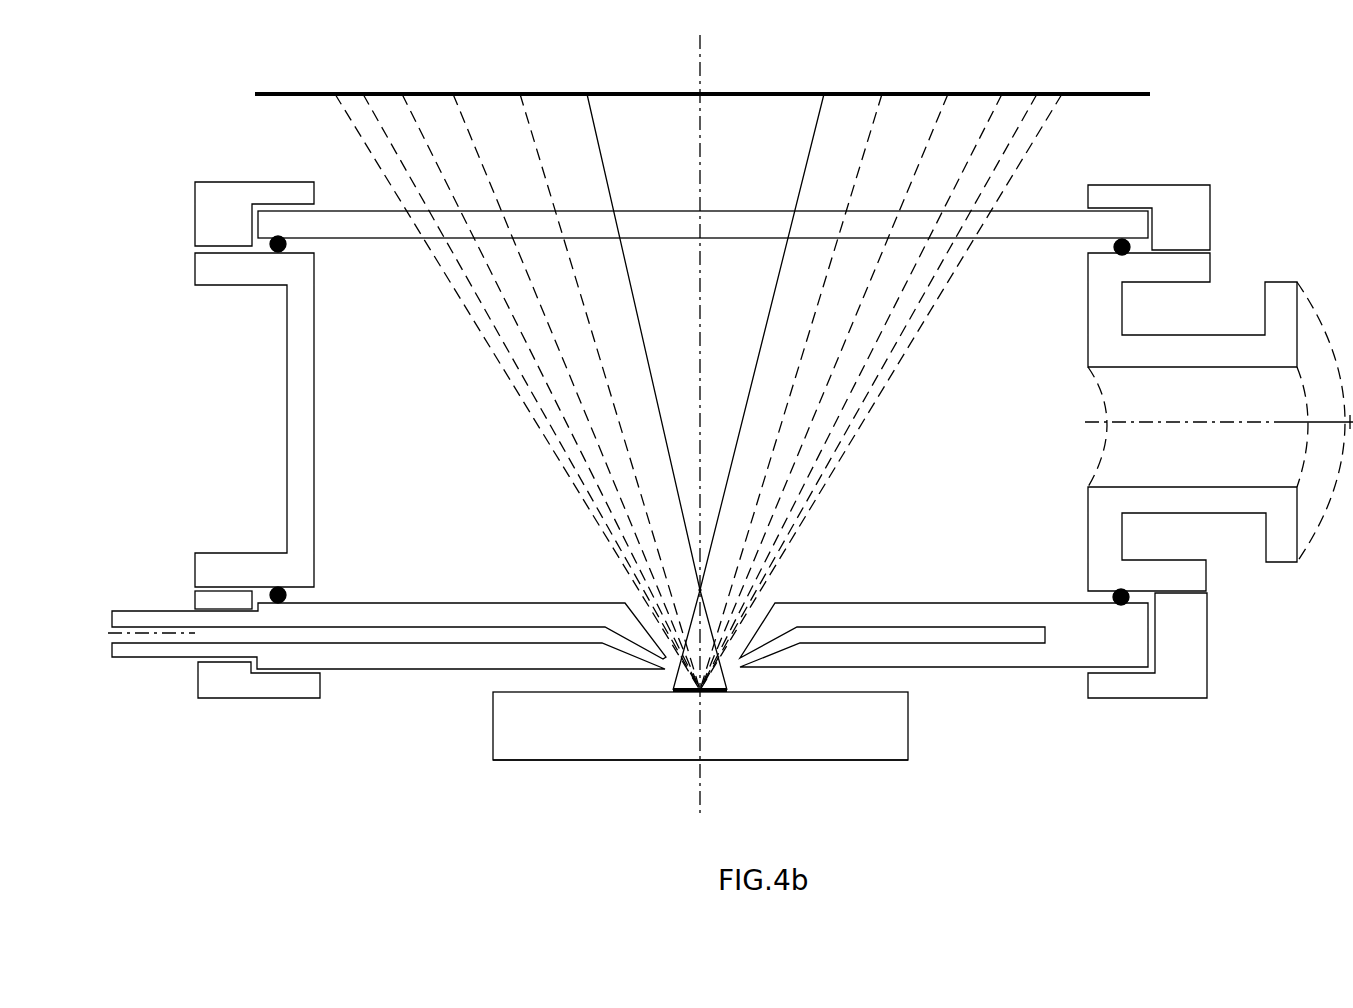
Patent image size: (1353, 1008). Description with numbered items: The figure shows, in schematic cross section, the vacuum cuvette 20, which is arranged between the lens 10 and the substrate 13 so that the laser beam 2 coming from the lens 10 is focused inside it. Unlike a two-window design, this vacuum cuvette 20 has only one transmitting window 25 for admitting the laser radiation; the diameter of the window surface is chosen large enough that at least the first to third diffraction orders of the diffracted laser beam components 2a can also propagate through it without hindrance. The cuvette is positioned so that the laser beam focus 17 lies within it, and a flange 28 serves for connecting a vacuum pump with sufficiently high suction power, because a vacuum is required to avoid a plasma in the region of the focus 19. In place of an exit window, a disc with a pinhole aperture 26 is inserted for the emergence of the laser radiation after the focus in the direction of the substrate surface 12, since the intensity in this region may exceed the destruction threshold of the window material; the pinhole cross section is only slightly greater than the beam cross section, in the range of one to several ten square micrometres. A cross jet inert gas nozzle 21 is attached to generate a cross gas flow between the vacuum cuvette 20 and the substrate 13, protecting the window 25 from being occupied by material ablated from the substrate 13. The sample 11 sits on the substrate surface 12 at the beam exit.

The lens 10 is at (1148, 96).
The transmitting window 25 is at (1105, 228).
The flange 28 is at (1185, 352).
The laser beam 2 is at (780, 270).
The diffracted laser beam components 2a is at (812, 334).
The laser beam focus 17 is at (300, 412).
The vacuum cuvette 2 20 is at (178, 429).
The focus 19 is at (702, 588).
The cross jet inert gas nozzle 21 is at (480, 633).
The pinhole aperture 26 is at (975, 613).
The sample 11 is at (717, 694).
The substrate surface 12 is at (872, 692).
The substrate 13 is at (818, 740).